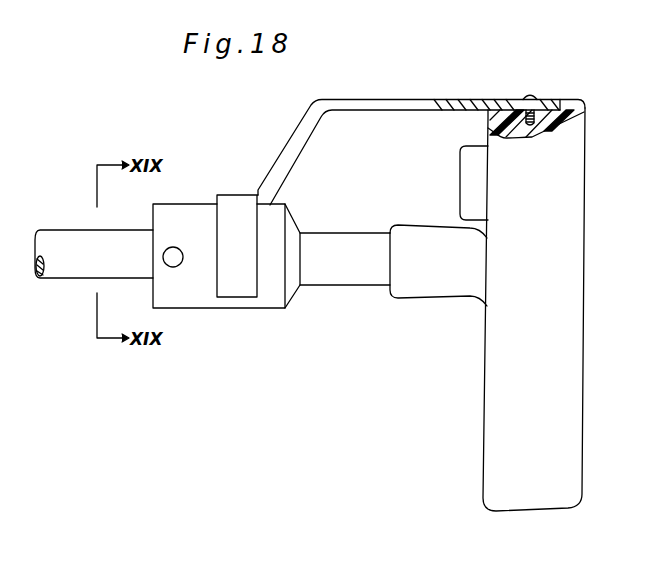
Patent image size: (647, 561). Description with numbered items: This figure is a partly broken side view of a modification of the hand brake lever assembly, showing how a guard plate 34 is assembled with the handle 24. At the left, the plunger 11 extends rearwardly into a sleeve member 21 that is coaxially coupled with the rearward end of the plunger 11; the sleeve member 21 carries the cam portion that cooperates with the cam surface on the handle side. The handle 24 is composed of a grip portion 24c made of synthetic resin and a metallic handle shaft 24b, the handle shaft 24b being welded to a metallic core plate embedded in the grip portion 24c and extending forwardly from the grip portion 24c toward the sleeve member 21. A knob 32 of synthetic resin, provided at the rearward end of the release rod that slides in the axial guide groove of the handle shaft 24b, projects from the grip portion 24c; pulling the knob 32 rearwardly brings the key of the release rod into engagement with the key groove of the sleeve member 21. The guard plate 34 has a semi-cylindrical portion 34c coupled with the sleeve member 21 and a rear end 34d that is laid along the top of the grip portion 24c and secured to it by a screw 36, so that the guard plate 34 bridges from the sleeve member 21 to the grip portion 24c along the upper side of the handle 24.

The plunger 11 is at (62, 238).
The sleeve member 21 is at (205, 302).
The handle 24 is at (584, 322).
The metallic handle shaft 24b is at (338, 275).
The grip portion 24c is at (585, 104).
The knob 32 is at (468, 170).
The guard plate 34 is at (300, 133).
The semi-cylindrical portion 34c is at (242, 278).
The rear end 34d is at (552, 105).
The screw 36 is at (528, 97).